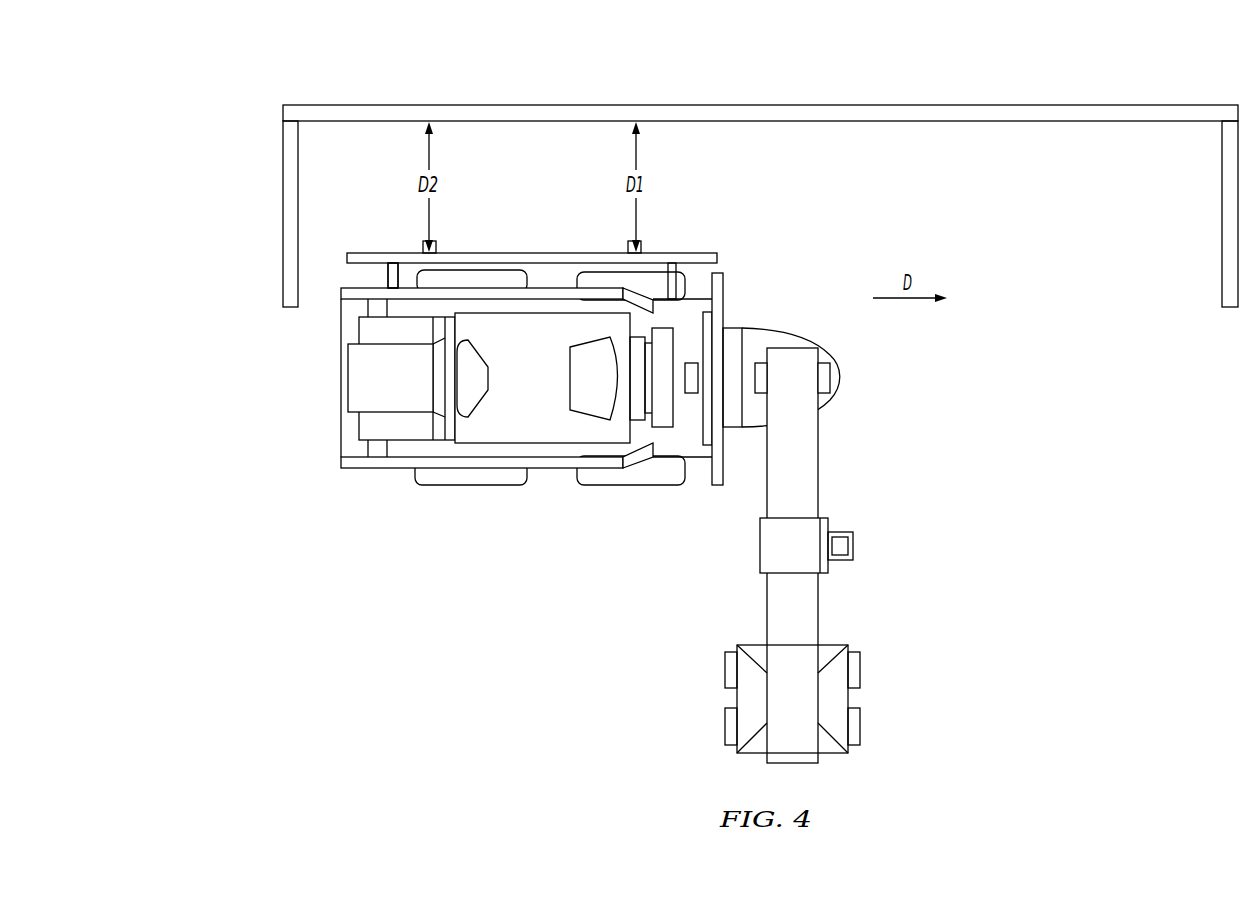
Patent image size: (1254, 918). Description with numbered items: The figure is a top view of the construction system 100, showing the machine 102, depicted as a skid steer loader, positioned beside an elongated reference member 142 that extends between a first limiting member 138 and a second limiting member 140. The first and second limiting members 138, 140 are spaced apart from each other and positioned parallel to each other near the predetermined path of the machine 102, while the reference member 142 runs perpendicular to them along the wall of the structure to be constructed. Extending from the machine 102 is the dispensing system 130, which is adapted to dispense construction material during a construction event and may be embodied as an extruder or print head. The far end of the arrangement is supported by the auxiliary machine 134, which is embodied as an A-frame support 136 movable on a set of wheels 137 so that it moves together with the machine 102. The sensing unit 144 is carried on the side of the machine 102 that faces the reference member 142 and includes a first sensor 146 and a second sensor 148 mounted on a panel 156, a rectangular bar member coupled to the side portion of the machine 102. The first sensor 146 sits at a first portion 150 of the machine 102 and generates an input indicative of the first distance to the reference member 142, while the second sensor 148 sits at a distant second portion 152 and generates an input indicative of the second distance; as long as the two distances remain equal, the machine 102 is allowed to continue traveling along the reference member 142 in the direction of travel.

The construction system 100 is at (722, 176).
The machine 102 is at (552, 366).
The dispensing system 130 is at (781, 545).
The auxiliary machine 134 is at (781, 699).
The A-frame support 136 is at (837, 693).
The set of wheels 137 is at (862, 672).
The first limiting member 138 is at (1230, 212).
The second limiting member 140 is at (290, 207).
The reference member 142 is at (482, 113).
The sensing unit 144 is at (536, 228).
The first sensor 146 is at (643, 245).
The second sensor 148 is at (438, 247).
The first portion 150 is at (736, 252).
The second portion 152 is at (330, 247).
The panel 156 is at (533, 250).